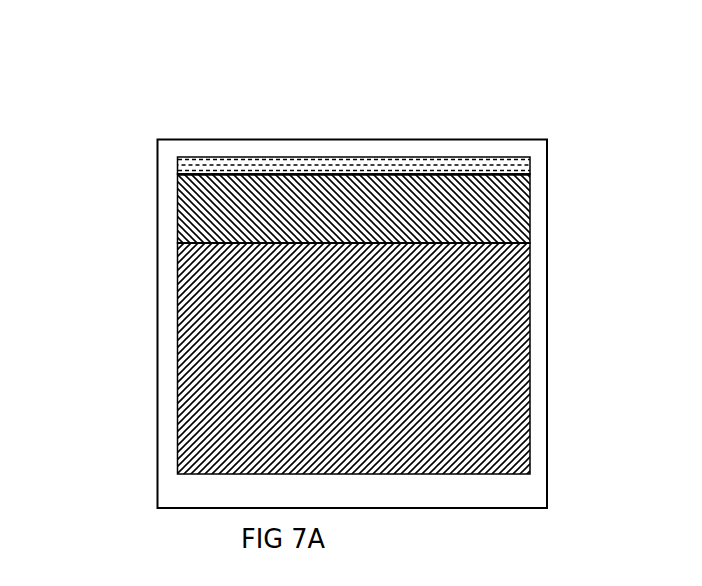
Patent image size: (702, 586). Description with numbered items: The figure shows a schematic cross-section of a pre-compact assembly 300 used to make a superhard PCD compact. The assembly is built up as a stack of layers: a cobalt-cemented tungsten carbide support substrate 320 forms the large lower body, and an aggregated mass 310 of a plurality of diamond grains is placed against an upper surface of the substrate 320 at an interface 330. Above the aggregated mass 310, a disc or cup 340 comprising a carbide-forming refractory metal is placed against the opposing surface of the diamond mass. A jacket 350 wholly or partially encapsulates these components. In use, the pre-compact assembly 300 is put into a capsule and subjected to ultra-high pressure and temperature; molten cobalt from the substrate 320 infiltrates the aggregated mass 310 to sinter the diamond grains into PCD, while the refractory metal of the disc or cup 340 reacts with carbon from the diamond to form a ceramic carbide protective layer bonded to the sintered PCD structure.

The pre-compact assembly 300 is at (288, 258).
The aggregated mass 310 is at (195, 212).
The cobalt-cemented tungsten carbide support substrate 320 is at (190, 346).
The interface 330 is at (177, 243).
The disc or cup 340 is at (177, 168).
The jacket 350 is at (510, 148).